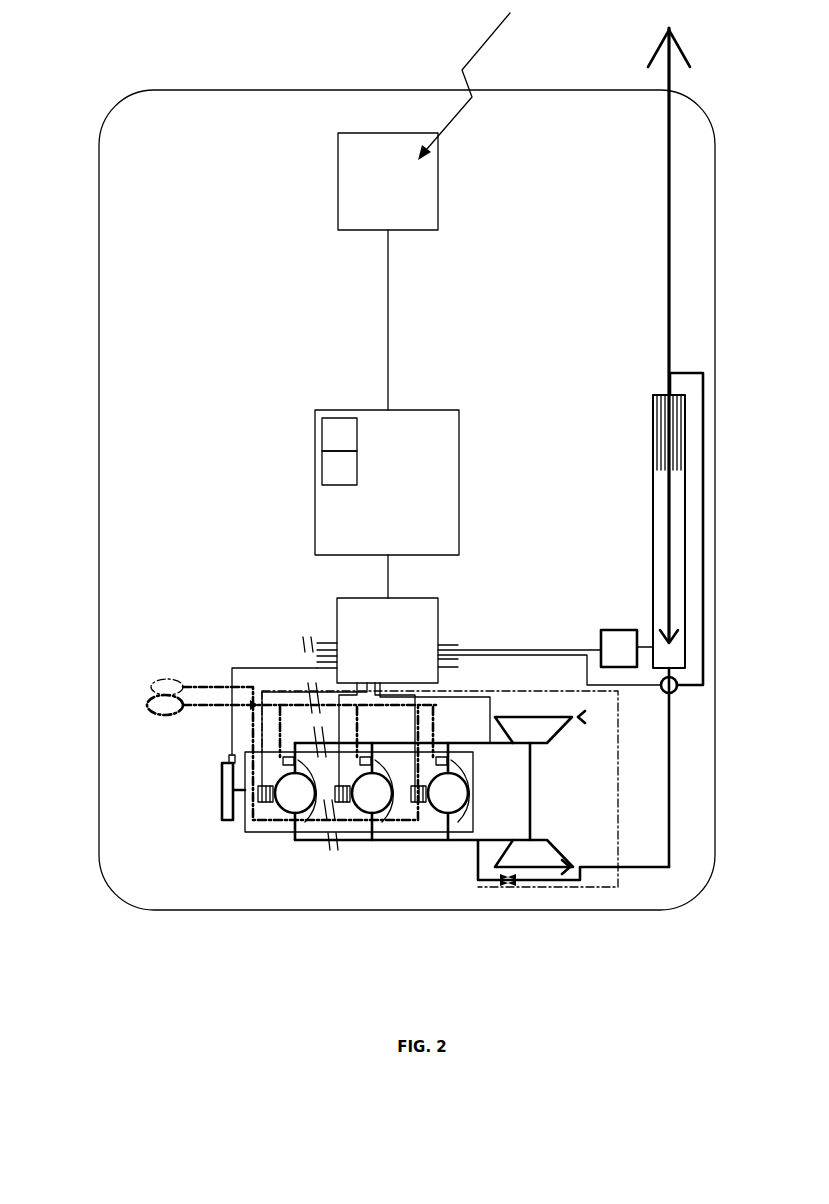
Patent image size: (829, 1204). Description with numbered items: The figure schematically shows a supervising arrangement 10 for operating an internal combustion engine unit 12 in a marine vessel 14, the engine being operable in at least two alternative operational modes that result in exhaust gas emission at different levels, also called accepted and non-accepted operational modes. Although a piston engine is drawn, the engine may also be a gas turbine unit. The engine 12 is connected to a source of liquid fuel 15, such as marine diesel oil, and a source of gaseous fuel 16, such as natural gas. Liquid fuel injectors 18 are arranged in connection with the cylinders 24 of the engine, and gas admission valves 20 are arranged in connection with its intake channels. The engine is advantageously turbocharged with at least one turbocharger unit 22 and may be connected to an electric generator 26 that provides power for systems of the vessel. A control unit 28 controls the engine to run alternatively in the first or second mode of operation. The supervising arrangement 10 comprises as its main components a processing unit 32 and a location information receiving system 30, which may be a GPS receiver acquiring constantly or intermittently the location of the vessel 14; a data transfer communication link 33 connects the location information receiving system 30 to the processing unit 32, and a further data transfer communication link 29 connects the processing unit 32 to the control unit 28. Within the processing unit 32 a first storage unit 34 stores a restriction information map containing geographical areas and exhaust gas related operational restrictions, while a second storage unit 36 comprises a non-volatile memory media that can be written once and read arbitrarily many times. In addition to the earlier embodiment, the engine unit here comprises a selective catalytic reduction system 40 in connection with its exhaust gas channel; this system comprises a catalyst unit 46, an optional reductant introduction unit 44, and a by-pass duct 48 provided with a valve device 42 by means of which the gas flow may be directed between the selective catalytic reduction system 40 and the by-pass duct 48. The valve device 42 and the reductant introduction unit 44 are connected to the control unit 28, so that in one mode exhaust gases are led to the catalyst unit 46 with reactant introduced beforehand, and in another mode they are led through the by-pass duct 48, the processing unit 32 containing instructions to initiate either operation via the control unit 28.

The supervising arrangement 10 is at (205, 248).
The internal combustion engine unit 12 is at (239, 637).
The marine vessel 14 is at (99, 452).
The source of liquid fuel 15 is at (155, 686).
The source of gaseous fuel 16 is at (153, 704).
The liquid fuel injectors 18 is at (280, 823).
The gas admission valves 20 is at (310, 820).
The turbocharger unit 22 is at (537, 790).
The cylinders 24 is at (285, 801).
The electric generator 26 is at (222, 790).
The control unit 28 is at (378, 649).
The data transfer communication link 29 is at (388, 575).
The location information receiving system 30 is at (378, 191).
The processing unit 32 is at (378, 485).
The data transfer communication link 33 is at (388, 320).
The first storage unit 34 is at (329, 446).
The second storage unit 36 is at (329, 480).
The selective catalytic reduction system 40 is at (610, 481).
The valve device 42 is at (665, 693).
The reductant introduction unit 44 is at (628, 630).
The catalyst unit 46 is at (662, 445).
The by-pass duct 48 is at (680, 373).